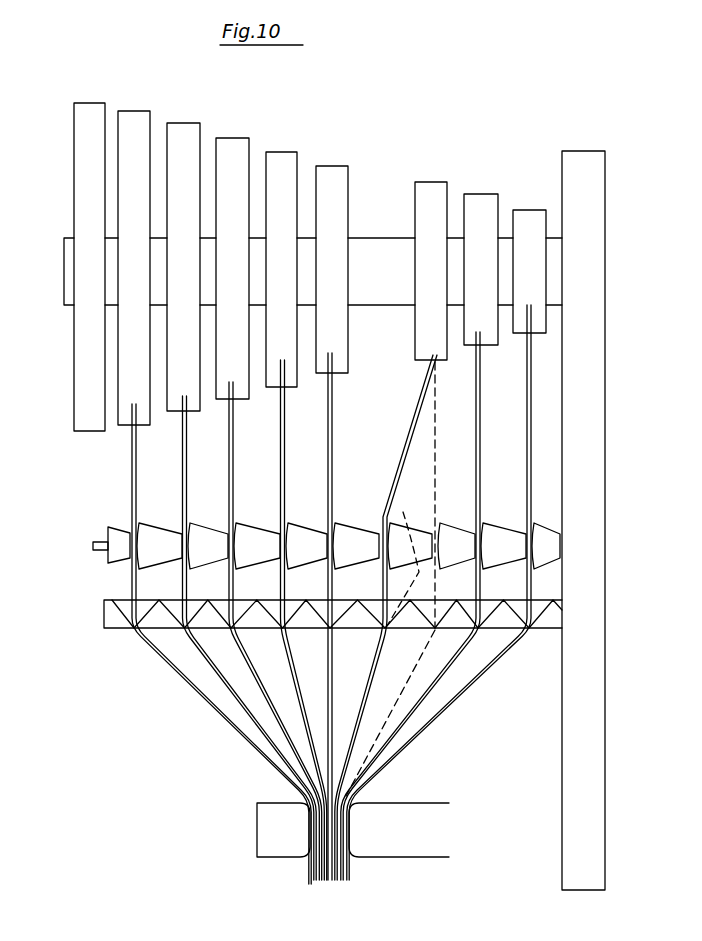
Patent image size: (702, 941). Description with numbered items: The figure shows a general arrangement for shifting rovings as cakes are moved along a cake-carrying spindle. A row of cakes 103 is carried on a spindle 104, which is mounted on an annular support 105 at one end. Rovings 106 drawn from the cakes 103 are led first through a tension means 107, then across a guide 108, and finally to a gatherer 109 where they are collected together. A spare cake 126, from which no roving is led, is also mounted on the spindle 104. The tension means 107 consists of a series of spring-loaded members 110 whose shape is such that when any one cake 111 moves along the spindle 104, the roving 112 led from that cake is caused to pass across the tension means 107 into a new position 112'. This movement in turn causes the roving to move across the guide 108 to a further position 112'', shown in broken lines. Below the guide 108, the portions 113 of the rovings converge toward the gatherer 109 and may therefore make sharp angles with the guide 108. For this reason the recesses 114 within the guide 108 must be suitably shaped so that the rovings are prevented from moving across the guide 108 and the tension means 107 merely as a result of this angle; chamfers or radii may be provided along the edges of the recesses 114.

The cakes 103 is at (230, 146).
The spindle 104 is at (382, 245).
The annular support 105 is at (590, 159).
The rovings 106 is at (131, 464).
The tension means 107 is at (93, 546).
The guide 108 is at (107, 618).
The gatherer 109 is at (262, 830).
The spring-loaded members 110 is at (258, 541).
The cake 111 is at (436, 190).
The roving 112 is at (386, 617).
The new position of roving 112' is at (415, 495).
The position of roving at guide 112'' is at (429, 713).
The portions of rovings 113 is at (178, 672).
The recesses 114 is at (113, 600).
The spare cake 126 is at (92, 112).